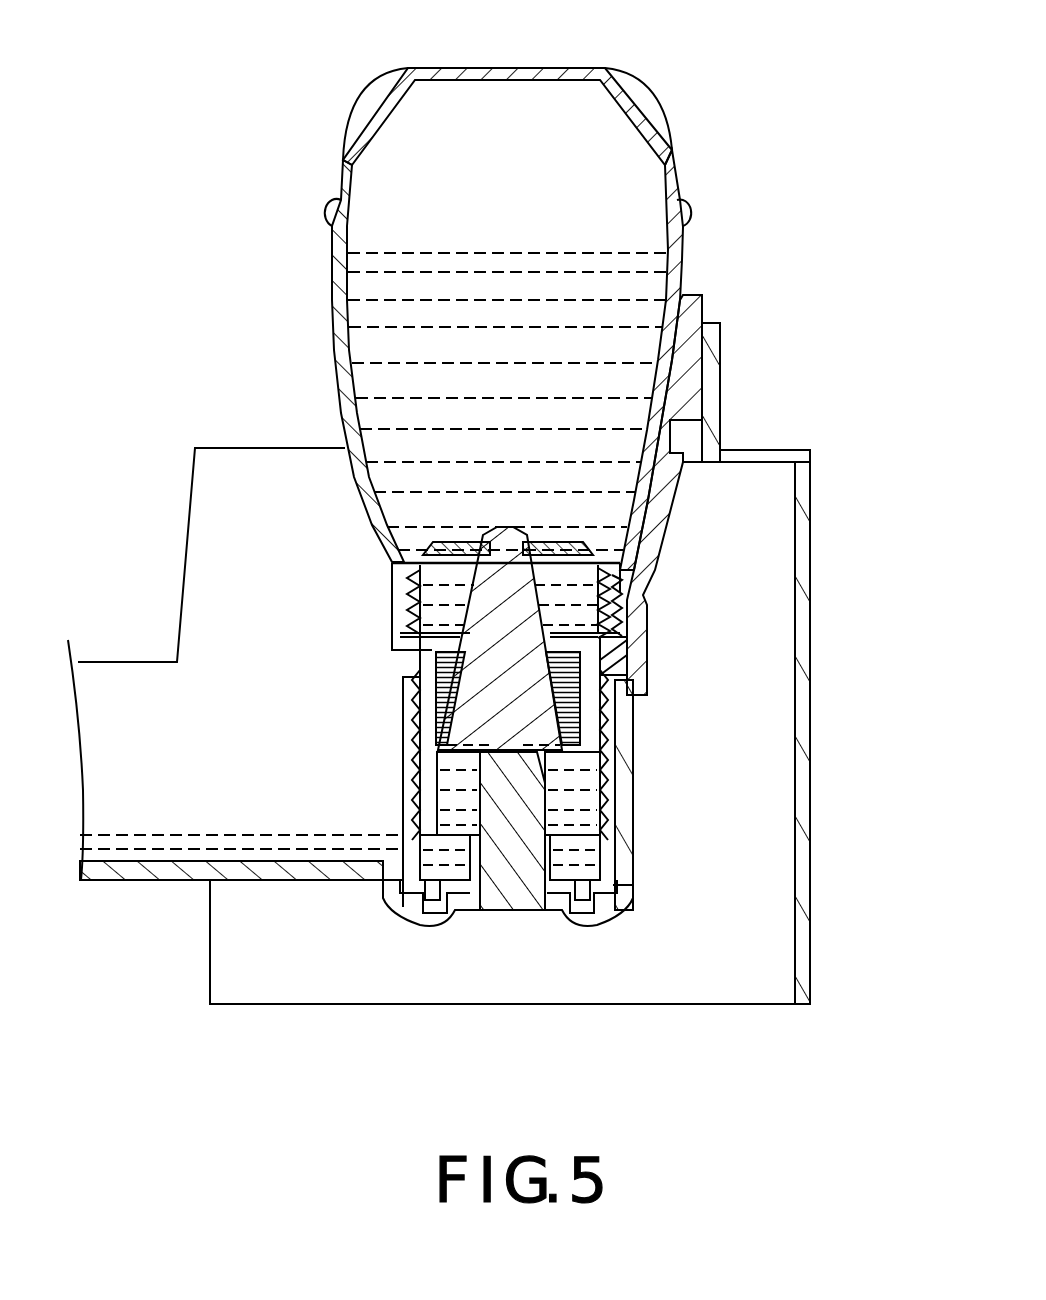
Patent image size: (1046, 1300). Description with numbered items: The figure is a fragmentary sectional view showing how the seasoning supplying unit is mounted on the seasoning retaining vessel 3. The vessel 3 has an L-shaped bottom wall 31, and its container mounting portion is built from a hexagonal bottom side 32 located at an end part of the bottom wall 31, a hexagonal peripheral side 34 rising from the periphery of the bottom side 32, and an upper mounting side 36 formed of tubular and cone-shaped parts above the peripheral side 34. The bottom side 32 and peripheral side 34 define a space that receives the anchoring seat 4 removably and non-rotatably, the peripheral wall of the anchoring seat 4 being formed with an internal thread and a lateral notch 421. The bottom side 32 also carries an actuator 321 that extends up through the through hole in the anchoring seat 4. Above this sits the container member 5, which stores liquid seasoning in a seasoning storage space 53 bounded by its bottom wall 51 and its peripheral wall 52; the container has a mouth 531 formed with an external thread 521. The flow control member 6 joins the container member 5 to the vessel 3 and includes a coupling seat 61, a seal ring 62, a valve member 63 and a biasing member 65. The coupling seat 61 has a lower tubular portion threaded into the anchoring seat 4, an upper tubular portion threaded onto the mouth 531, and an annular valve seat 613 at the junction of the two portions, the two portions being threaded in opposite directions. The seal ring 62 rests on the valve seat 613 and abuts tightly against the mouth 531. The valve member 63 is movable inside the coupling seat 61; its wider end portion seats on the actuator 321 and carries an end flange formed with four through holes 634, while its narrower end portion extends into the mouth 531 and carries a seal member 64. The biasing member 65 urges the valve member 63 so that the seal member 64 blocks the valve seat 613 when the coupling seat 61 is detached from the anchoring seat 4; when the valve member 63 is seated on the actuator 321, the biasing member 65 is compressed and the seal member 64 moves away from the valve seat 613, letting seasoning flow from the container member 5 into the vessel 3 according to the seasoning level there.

The seasoning retaining vessel 3 is at (262, 889).
The bottom wall 31 is at (120, 880).
The bottom side 32 is at (613, 905).
The actuator 321 is at (513, 815).
The peripheral side 34 is at (623, 886).
The upper mounting side 36 is at (720, 352).
The anchoring seat 4 is at (613, 822).
The lateral notch 421 is at (412, 780).
The container member 5 is at (676, 103).
The bottom wall 51 is at (566, 76).
The peripheral wall 52 is at (693, 312).
The external thread 521 is at (610, 620).
The seasoning storage space 53 is at (625, 182).
The mouth 531 is at (585, 618).
The flow control member 6 is at (572, 860).
The coupling seat 61 is at (600, 755).
The annular valve seat 613 is at (417, 650).
The seal ring 62 is at (612, 648).
The valve member 63 is at (413, 602).
The through holes 634 is at (633, 813).
The seal member 64 is at (563, 530).
The biasing member 65 is at (413, 697).